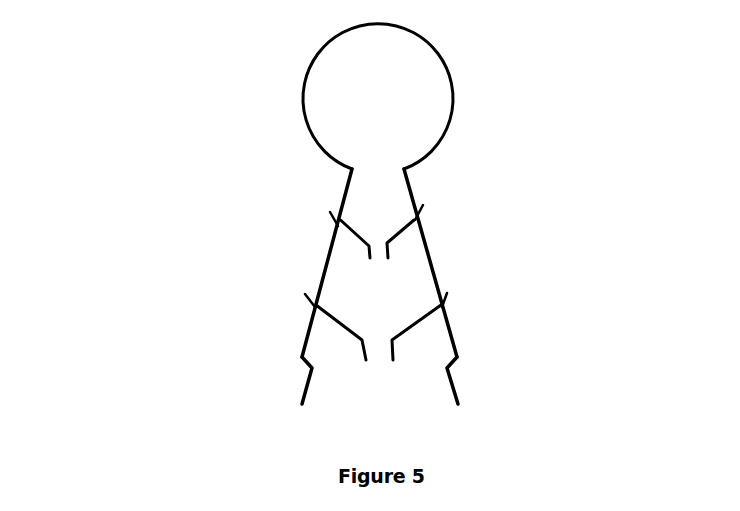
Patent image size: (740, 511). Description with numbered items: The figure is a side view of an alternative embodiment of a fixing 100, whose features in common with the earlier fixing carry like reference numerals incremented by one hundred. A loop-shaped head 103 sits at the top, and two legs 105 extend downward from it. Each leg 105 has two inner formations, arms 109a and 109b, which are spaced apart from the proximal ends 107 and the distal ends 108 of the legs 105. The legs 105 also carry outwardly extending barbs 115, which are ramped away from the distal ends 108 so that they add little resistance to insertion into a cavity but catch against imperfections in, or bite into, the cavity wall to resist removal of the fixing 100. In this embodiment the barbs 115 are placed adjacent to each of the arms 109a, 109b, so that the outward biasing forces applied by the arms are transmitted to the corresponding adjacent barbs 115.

The fixing 100 is at (146, 117).
The head 103 is at (458, 78).
The legs 105 is at (452, 337).
The proximal ends 107 is at (358, 168).
The distal ends 108 is at (297, 402).
The arms 109a is at (388, 240).
The arms 109b is at (350, 330).
The barbs 115 is at (448, 292).